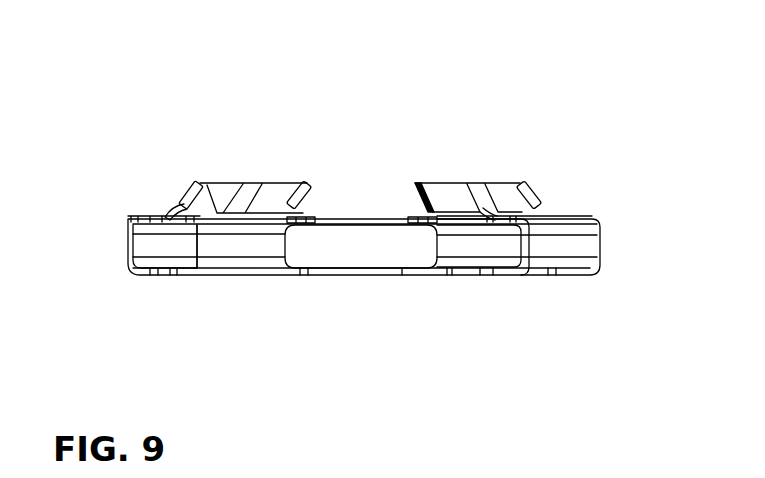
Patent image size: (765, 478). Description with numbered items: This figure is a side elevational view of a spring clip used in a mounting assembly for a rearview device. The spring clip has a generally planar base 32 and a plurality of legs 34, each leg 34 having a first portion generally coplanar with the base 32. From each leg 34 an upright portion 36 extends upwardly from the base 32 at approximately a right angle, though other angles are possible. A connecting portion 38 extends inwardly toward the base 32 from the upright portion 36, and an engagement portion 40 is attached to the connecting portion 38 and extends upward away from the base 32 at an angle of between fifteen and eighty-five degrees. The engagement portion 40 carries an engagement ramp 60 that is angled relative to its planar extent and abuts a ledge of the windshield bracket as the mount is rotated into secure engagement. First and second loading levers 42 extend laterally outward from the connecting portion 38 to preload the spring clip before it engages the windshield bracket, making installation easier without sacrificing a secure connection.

The base 32 is at (370, 276).
The leg 34 is at (323, 274).
The upright portion 36 is at (128, 245).
The connecting portion 38 is at (172, 223).
The engagement portion 40 is at (270, 197).
The loading lever 42 is at (143, 218).
The engagement ramp 60 is at (187, 188).